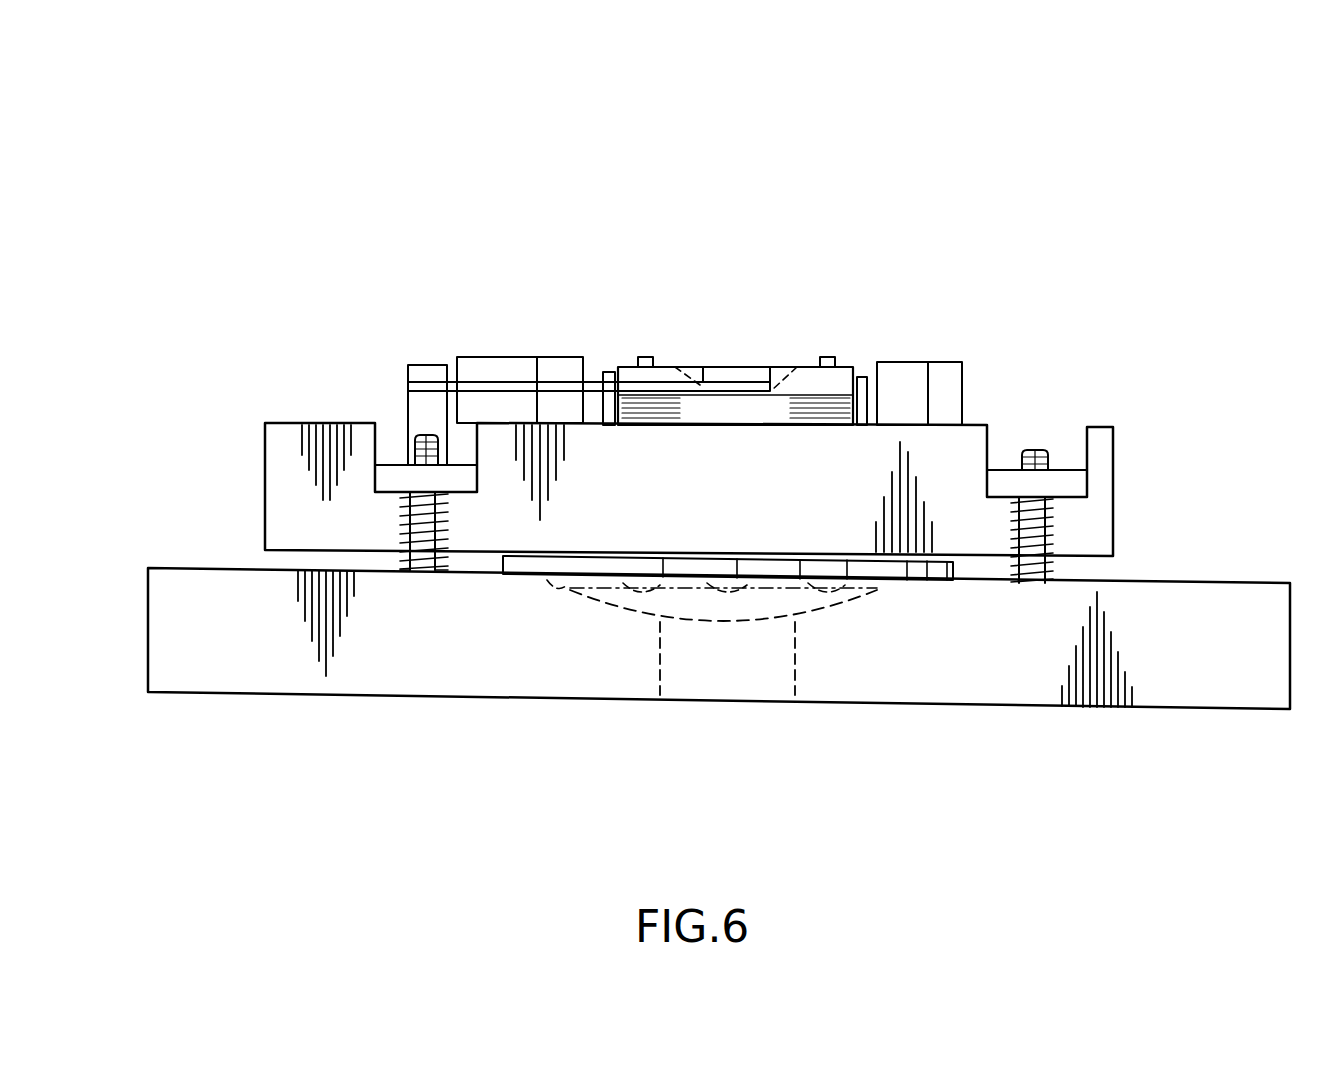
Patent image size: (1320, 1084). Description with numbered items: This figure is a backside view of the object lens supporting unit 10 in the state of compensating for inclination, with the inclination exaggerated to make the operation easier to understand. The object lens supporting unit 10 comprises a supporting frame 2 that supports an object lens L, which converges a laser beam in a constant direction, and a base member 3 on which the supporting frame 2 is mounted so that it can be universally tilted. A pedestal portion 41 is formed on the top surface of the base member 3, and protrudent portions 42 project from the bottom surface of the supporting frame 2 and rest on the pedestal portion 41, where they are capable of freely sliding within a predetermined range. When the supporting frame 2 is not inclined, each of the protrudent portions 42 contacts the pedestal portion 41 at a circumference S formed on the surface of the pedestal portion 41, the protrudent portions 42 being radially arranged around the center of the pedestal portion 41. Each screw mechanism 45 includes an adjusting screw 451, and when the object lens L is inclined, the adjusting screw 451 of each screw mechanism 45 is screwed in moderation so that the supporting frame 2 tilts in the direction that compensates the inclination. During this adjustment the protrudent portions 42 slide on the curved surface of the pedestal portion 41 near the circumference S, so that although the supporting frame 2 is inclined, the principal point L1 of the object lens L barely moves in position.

The object lens supporting unit 10 is at (1187, 239).
The supporting frame 2 is at (293, 437).
The base member 3 is at (240, 671).
The pedestal portion 41 is at (613, 600).
The protrudent portions 42 is at (613, 565).
The screw mechanism 45 is at (731, 427).
The adjusting screw 451 is at (417, 433).
The object lens L is at (693, 367).
The principal point L1 is at (743, 380).
The circumference S is at (793, 577).